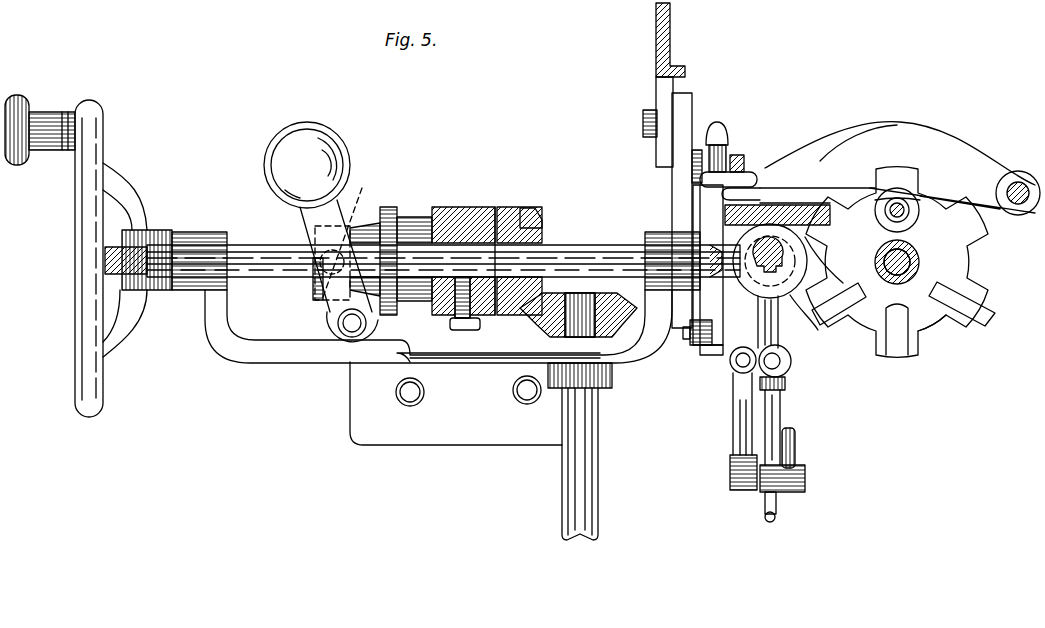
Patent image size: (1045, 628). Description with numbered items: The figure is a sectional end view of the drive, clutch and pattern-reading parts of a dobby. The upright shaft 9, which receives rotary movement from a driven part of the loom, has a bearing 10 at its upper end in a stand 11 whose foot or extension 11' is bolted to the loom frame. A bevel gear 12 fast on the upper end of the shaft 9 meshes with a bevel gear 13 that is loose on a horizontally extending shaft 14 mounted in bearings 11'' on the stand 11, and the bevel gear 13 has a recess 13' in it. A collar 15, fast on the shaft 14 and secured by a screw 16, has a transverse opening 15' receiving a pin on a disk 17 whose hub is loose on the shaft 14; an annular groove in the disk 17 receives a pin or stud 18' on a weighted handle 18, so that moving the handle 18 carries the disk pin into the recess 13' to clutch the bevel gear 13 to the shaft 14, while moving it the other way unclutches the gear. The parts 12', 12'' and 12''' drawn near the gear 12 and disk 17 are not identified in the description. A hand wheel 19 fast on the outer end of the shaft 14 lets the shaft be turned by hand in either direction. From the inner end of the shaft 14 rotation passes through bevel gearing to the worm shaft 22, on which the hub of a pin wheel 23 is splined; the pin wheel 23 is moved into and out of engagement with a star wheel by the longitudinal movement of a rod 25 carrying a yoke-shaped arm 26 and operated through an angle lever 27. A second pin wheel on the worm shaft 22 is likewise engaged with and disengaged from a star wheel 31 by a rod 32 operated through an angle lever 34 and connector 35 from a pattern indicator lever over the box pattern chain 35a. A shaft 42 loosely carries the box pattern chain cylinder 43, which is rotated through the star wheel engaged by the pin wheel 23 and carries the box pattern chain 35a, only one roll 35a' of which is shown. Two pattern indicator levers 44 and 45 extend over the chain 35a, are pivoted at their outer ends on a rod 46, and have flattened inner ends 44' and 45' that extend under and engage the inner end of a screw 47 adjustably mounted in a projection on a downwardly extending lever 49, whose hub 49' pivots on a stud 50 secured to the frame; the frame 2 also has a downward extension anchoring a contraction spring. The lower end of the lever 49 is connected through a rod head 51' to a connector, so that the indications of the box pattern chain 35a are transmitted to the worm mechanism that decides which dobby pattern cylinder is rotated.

The frame 2 is at (672, 50).
The upright shaft 9 is at (580, 465).
The bearing 10 is at (602, 376).
The stand 11 is at (397, 309).
The foot or extension 11' is at (459, 404).
The bearings 11'' is at (436, 242).
The bevel gear 12 is at (542, 340).
The hub 12' is at (424, 237).
The hub 12'' is at (379, 235).
The lever alternate position 12''' is at (353, 230).
The bevel gear 13 is at (578, 263).
The recess 13' is at (539, 195).
The horizontally extending shaft 14 is at (280, 268).
The collar 15 is at (449, 246).
The transverse opening 15' is at (518, 243).
The screw 16 is at (462, 315).
The disk 17 is at (388, 230).
The weighted handle 18 is at (326, 229).
The pin or stud 18' is at (306, 292).
The hand wheel 19 is at (88, 155).
The worm shaft 22 is at (762, 270).
The pin wheel 23 is at (795, 318).
The rod 25 is at (784, 368).
The yoke-shaped arm 26 is at (786, 338).
The angle lever 27 is at (778, 428).
The star wheel 31 is at (932, 320).
The rod 32 is at (735, 362).
The angle lever 34 is at (738, 435).
The connector 35 is at (792, 450).
The box pattern chain 35a is at (926, 190).
The roll 35a' is at (917, 168).
The shaft 42 is at (950, 292).
The box pattern chain cylinder 43 is at (945, 265).
The pattern indicator lever 44 is at (900, 138).
The flattened upper surface 44' is at (757, 151).
The pattern indicator lever 45 is at (927, 152).
The flattened upper surface 45' is at (800, 176).
The rod 46 is at (1020, 188).
The screw 47 is at (716, 128).
The downwardly extending lever 49 is at (705, 359).
The hub 49' is at (727, 143).
The stud 50 is at (752, 172).
The rod head 51' is at (688, 340).